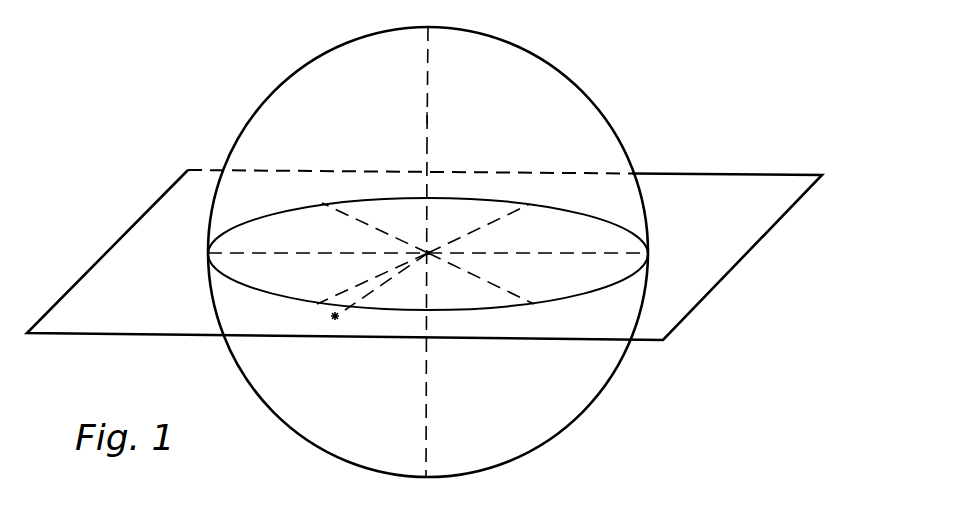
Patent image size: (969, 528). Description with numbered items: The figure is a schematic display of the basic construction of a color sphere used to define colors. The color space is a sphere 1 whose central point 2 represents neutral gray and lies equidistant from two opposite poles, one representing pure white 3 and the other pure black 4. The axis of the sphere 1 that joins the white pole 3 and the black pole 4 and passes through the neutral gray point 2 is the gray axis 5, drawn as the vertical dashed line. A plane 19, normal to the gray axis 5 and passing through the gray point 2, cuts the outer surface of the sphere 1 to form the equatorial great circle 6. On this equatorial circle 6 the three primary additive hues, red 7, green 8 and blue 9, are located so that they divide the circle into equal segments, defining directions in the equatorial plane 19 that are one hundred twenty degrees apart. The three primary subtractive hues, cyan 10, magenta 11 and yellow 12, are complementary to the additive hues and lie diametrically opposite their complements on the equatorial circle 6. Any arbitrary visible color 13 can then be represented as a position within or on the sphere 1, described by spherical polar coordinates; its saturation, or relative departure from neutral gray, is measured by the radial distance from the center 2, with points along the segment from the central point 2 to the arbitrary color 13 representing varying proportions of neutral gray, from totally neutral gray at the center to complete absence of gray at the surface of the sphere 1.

The sphere 1 is at (592, 98).
The central point 2 is at (430, 250).
The pure white pole 3 is at (428, 27).
The pure black pole 4 is at (425, 477).
The gray axis 5 is at (428, 118).
The equatorial great circle 6 is at (246, 285).
The red 7 is at (534, 304).
The green 8 is at (207, 253).
The blue 9 is at (528, 205).
The cyan 10 is at (322, 203).
The magenta 11 is at (650, 254).
The yellow 12 is at (317, 304).
The arbitrary visible color 13 is at (338, 319).
The equatorial plane 19 is at (761, 241).